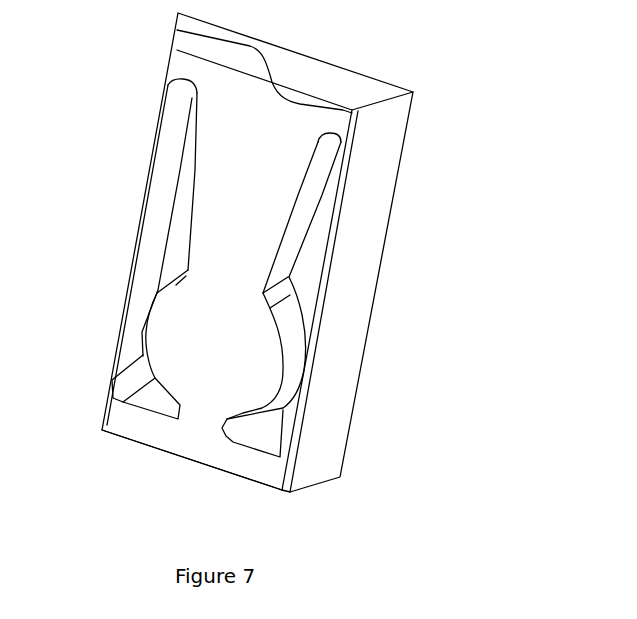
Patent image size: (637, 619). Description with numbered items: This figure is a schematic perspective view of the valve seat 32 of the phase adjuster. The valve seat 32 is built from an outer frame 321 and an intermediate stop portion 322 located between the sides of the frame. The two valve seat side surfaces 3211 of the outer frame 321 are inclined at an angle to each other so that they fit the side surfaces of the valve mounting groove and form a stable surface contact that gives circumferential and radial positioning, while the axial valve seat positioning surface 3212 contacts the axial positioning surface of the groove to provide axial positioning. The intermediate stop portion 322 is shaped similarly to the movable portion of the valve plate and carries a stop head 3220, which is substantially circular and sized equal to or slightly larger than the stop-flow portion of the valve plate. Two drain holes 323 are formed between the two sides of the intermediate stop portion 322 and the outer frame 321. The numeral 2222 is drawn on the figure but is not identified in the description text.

The valve seat 32 is at (409, 78).
The outer frame 321 is at (168, 138).
The valve seat side surfaces 3211 is at (378, 118).
The intermediate stop portion 322 is at (300, 203).
The drain holes 323 is at (313, 273).
The curved clamping portion 2222 is at (223, 300).
The stop head 3220 is at (292, 338).
The axial valve seat positioning surface 3212 is at (205, 466).